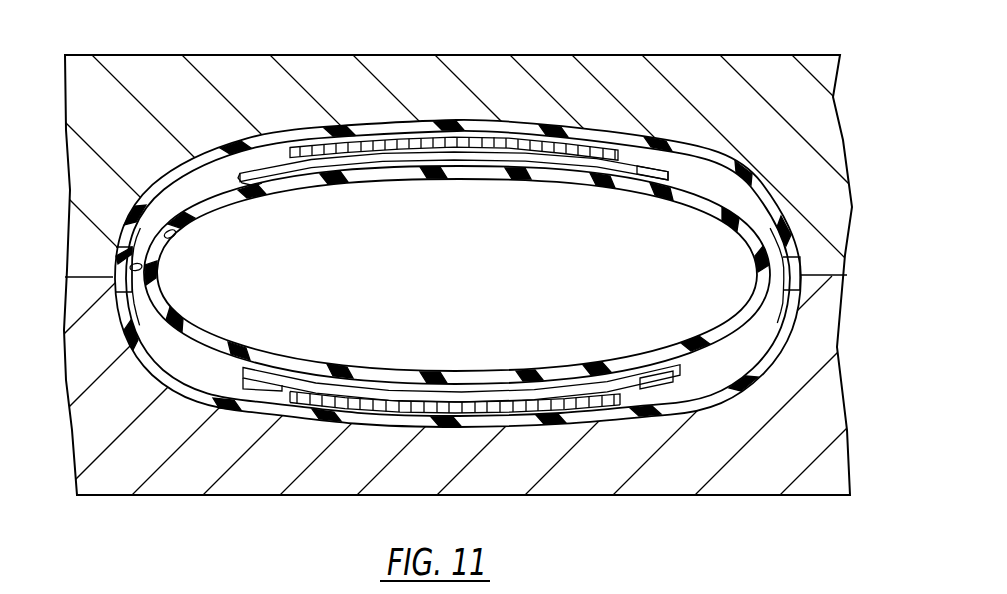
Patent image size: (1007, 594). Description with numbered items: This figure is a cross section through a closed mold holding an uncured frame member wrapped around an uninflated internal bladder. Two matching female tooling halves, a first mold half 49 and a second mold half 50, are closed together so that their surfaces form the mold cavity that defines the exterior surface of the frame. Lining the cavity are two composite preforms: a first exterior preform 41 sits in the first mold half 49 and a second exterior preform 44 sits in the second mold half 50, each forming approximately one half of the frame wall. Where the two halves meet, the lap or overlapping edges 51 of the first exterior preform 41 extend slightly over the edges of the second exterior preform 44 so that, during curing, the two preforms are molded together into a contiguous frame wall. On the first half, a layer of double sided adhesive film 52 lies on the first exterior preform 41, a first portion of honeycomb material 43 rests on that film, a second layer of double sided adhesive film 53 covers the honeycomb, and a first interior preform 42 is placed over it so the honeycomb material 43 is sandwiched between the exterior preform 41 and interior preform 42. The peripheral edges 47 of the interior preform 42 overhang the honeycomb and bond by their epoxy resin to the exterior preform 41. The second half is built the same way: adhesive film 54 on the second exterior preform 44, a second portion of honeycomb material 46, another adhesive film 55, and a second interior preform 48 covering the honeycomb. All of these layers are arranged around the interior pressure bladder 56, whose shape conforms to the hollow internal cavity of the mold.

The first exterior preform 41 is at (600, 410).
The first interior preform 42 is at (245, 385).
The first portion of honeycomb material 43 is at (355, 412).
The second exterior preform 44 is at (268, 136).
The second portion of honeycomb material 46 is at (362, 141).
The peripheral edges 47 is at (268, 372).
The second interior preform 48 is at (493, 155).
The first mold half 49 is at (690, 487).
The second mold half 50 is at (702, 62).
The overlapping edges 51 is at (113, 254).
The double sided adhesive film 52 is at (377, 396).
The second layer of double sided adhesive film 53 is at (446, 413).
The double sided adhesive film 54 is at (306, 143).
The adhesive film 55 is at (325, 163).
The interior pressure bladder 56 is at (165, 233).